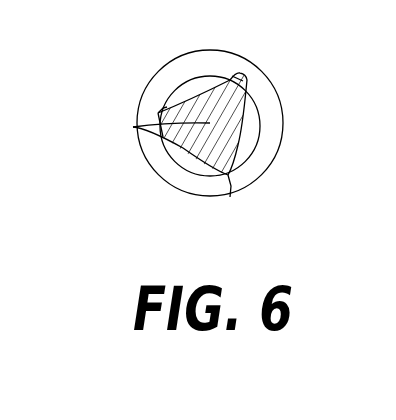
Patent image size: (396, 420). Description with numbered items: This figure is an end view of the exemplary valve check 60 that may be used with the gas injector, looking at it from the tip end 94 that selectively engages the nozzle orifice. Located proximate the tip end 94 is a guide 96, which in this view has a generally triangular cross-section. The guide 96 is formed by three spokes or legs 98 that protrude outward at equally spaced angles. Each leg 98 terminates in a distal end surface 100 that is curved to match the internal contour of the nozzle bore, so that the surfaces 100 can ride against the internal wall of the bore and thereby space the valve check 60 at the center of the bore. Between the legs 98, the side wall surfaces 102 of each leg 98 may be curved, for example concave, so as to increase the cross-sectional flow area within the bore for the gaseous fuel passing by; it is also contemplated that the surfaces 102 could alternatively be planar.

The valve check 60 is at (300, 70).
The tip end 94 is at (266, 137).
The guide 96 is at (160, 178).
The legs 98 is at (163, 108).
The distal end surface 100 is at (133, 127).
The side wall surfaces 102 is at (187, 190).